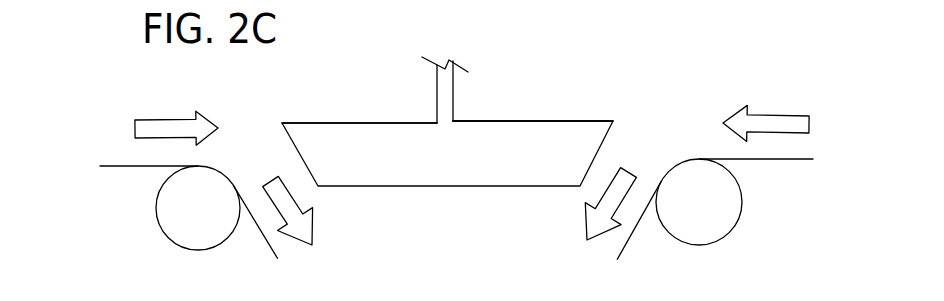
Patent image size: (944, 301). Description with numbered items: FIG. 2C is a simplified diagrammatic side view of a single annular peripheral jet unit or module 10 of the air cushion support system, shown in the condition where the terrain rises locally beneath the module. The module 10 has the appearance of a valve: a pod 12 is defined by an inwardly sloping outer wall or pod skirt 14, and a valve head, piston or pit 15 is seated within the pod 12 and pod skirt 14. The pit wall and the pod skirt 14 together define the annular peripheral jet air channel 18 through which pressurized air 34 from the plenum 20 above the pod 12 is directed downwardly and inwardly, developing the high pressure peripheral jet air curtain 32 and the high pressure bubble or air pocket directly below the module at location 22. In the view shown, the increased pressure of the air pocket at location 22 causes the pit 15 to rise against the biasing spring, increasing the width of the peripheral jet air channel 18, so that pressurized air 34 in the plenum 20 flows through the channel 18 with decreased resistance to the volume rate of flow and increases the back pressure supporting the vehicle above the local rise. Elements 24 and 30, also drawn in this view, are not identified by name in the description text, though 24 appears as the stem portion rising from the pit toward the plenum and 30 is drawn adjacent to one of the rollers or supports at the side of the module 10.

The peripheral jet unit or module 10 is at (205, 271).
The pod 12 is at (648, 225).
The pod skirt 14 is at (632, 233).
The pit 15 is at (526, 109).
The peripheral jet air channel 18 is at (263, 134).
The plenum 20 is at (369, 116).
The location of the air bubble or air pocket 22 is at (447, 244).
The stem 24 is at (455, 114).
The roller 30 is at (733, 232).
The peripheral jet air curtain 32 is at (313, 202).
The pressurized air 34 is at (147, 119).